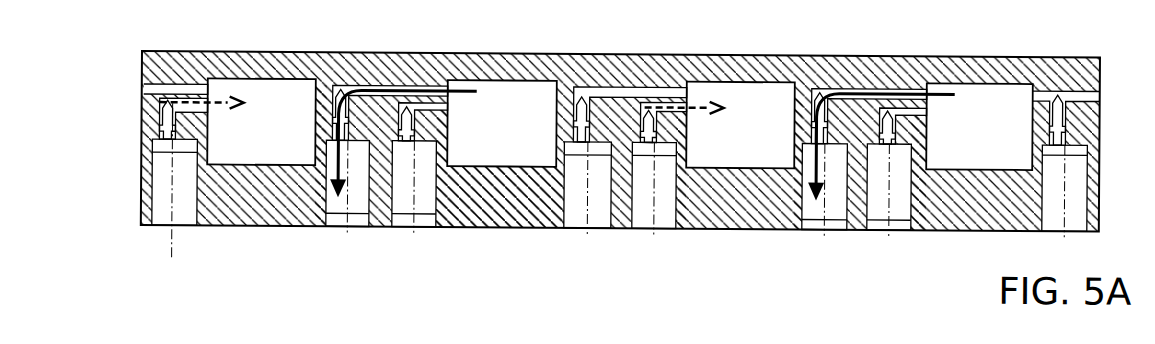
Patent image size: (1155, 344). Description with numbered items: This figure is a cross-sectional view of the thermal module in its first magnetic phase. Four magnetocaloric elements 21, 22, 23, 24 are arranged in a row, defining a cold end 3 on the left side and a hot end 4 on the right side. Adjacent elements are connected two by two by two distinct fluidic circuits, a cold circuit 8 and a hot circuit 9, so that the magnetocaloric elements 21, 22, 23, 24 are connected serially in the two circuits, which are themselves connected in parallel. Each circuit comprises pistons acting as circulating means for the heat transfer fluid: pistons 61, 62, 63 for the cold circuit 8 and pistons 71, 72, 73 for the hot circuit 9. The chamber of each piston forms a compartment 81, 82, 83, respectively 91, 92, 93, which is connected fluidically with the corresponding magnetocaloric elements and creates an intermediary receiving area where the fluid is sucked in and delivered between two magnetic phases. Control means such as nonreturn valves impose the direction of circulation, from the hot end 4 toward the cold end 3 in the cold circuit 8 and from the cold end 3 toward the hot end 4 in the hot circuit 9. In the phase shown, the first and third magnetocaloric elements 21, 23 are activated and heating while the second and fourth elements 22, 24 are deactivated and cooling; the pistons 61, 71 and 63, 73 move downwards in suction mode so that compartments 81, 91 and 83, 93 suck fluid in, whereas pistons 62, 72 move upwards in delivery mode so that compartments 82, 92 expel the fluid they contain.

The cold end 3 is at (195, 140).
The hot end 4 is at (1032, 112).
The cold circuit 8 is at (353, 87).
The hot circuit 9 is at (416, 82).
The first magnetocaloric element 21 is at (255, 91).
The second magnetocaloric element 22 is at (503, 92).
The third magnetocaloric element 23 is at (737, 93).
The fourth magnetocaloric element 24 is at (980, 91).
The piston 61 is at (362, 200).
The piston 71 is at (423, 200).
The compartment 81 is at (317, 187).
The compartment 91 is at (440, 188).
The piston 62 is at (598, 204).
The piston 72 is at (662, 204).
The compartment 82 is at (557, 187).
The compartment 92 is at (697, 196).
The piston 63 is at (837, 203).
The piston 73 is at (900, 203).
The compartment 83 is at (792, 189).
The compartment 93 is at (933, 193).